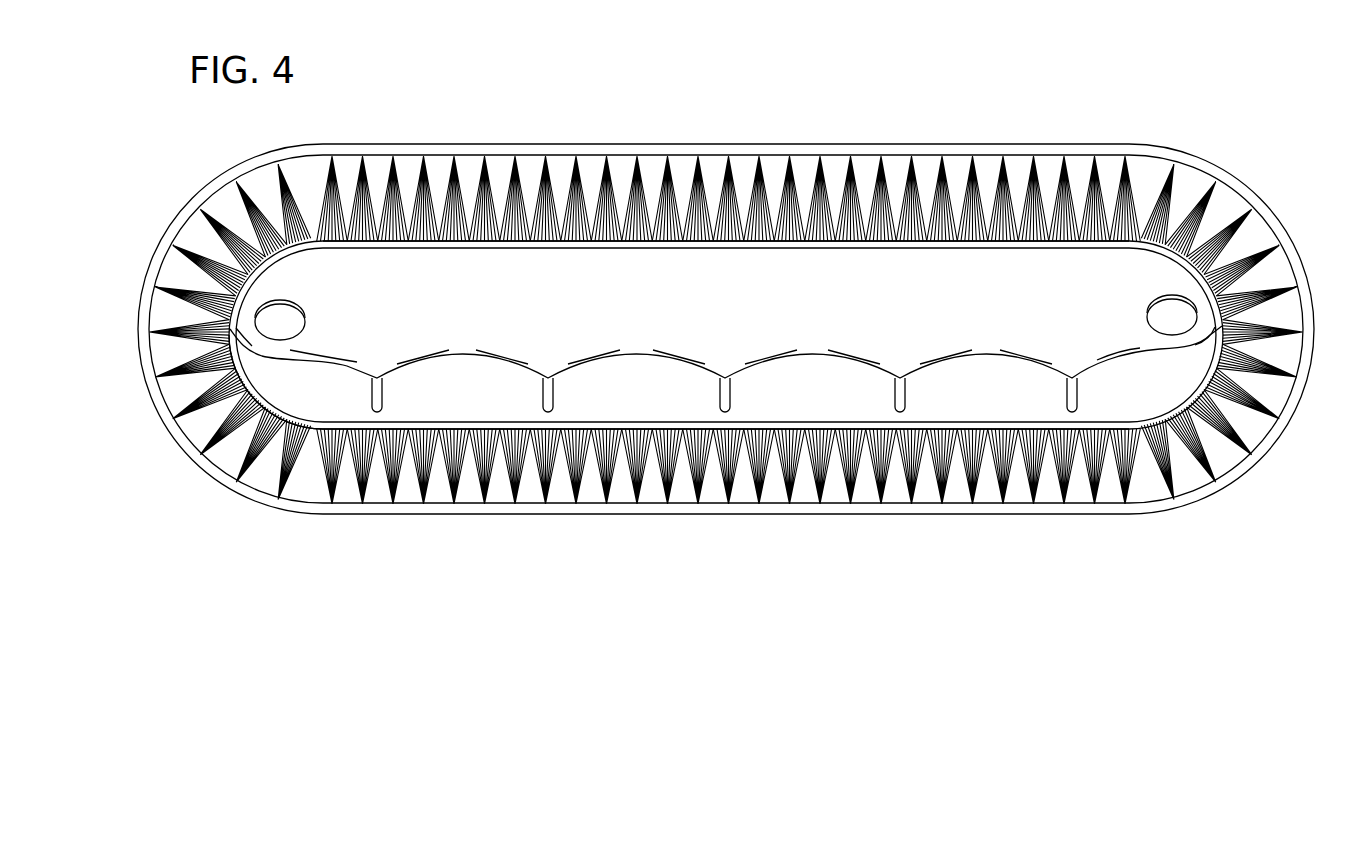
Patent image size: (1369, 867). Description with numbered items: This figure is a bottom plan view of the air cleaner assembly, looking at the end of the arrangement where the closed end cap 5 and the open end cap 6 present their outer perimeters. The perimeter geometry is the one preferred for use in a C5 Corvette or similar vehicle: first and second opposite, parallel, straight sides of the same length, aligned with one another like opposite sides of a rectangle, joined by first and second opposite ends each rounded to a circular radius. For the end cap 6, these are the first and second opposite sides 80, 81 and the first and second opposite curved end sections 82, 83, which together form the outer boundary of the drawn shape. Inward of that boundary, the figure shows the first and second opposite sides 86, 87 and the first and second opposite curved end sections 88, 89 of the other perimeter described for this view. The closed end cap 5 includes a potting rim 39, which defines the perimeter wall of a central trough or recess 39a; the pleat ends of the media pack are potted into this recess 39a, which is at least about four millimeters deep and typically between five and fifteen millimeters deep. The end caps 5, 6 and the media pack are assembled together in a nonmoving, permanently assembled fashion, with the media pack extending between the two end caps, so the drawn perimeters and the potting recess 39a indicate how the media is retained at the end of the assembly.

The first side 80 is at (730, 144).
The second side 81 is at (724, 512).
The first curved end section 82 is at (140, 329).
The second curved end section 83 is at (1314, 334).
The second, open, end cap 6 is at (1037, 514).
The potting rim 39 is at (631, 241).
The second side 87 is at (750, 241).
The first side 86 is at (773, 426).
The central trough or recess 39a is at (255, 404).
The first curved end section 88 is at (243, 302).
The second curved end section 89 is at (1205, 298).
The first, closed, end cap 5 is at (862, 320).